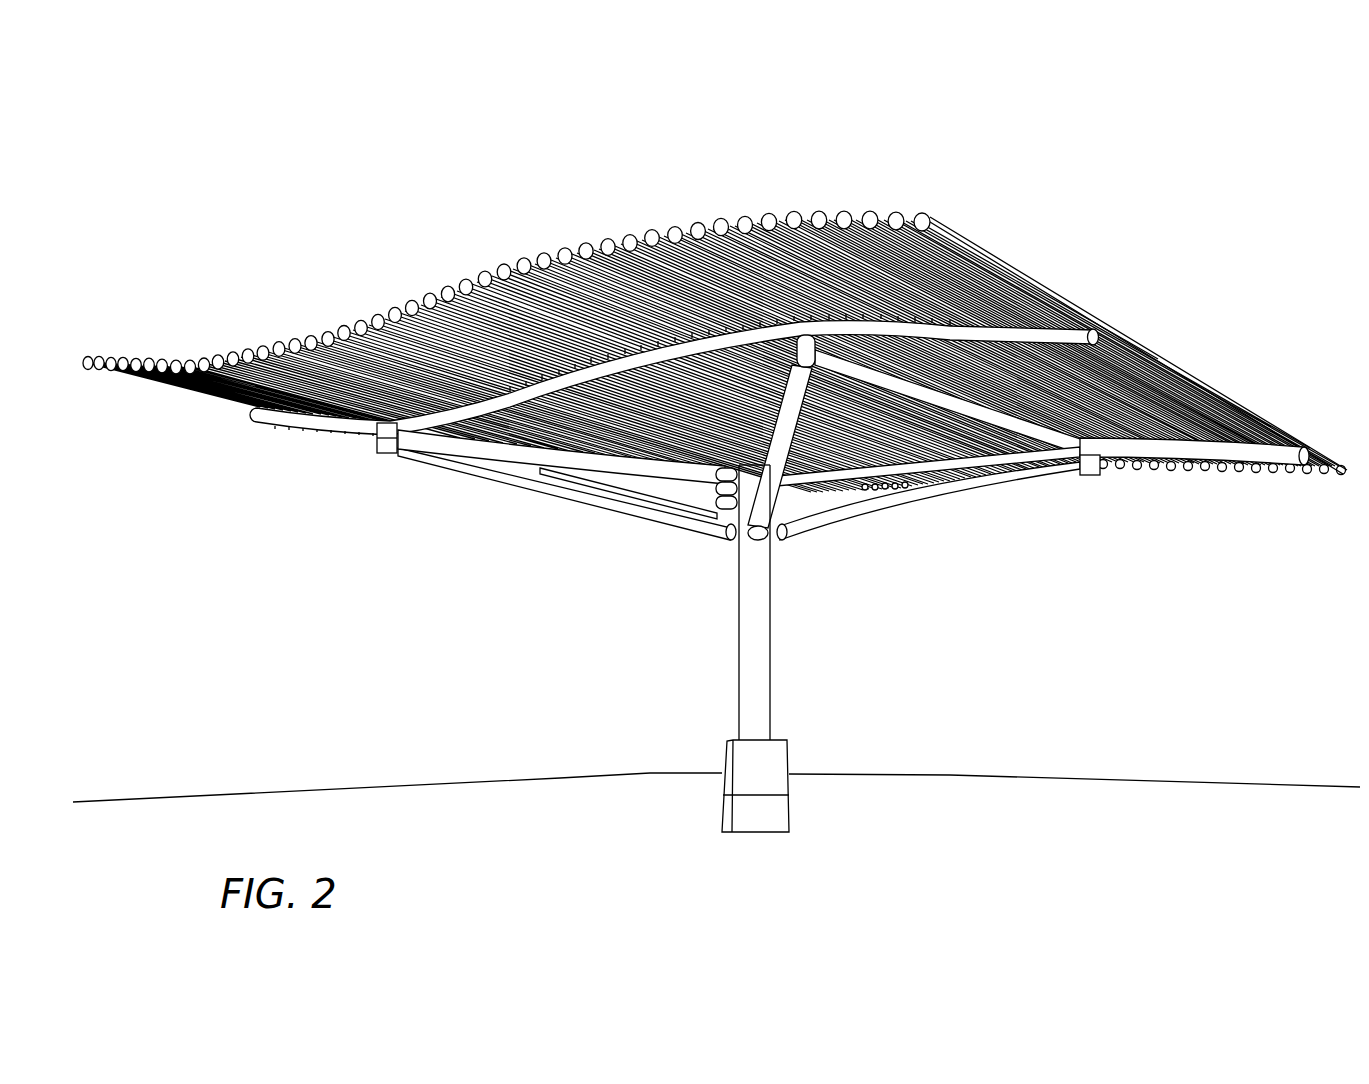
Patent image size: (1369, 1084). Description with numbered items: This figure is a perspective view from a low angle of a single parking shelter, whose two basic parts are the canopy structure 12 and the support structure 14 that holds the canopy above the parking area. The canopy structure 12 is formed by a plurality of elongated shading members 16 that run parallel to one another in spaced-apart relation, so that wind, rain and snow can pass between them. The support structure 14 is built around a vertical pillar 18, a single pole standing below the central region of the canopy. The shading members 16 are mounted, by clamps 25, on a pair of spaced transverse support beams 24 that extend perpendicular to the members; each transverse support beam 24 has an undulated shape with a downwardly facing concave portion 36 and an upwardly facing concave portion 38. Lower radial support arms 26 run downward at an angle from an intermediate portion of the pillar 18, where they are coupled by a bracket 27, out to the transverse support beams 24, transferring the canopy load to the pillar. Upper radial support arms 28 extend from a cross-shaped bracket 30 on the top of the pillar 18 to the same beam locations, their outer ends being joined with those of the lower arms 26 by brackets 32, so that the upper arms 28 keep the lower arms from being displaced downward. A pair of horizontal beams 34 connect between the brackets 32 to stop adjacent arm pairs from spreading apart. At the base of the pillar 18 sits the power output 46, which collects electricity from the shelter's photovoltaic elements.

The canopy structure 12 is at (1063, 253).
The support structure 14 is at (816, 601).
The elongated shading members 16 is at (872, 205).
The vertical pillar 18 is at (766, 705).
The transverse support beam 24 is at (1062, 319).
The clamps 25 is at (1060, 322).
The radial support arms 26 is at (520, 471).
The bracket 27 is at (743, 547).
The upper radial support arms 28 is at (787, 368).
The cross-shaped bracket 30 is at (727, 455).
The brackets 32 is at (806, 330).
The horizontal beams 34 is at (1000, 420).
The downwardly facing concave portion 36 is at (931, 306).
The upwardly facing concave portion 38 is at (306, 430).
The power output 46 is at (778, 767).